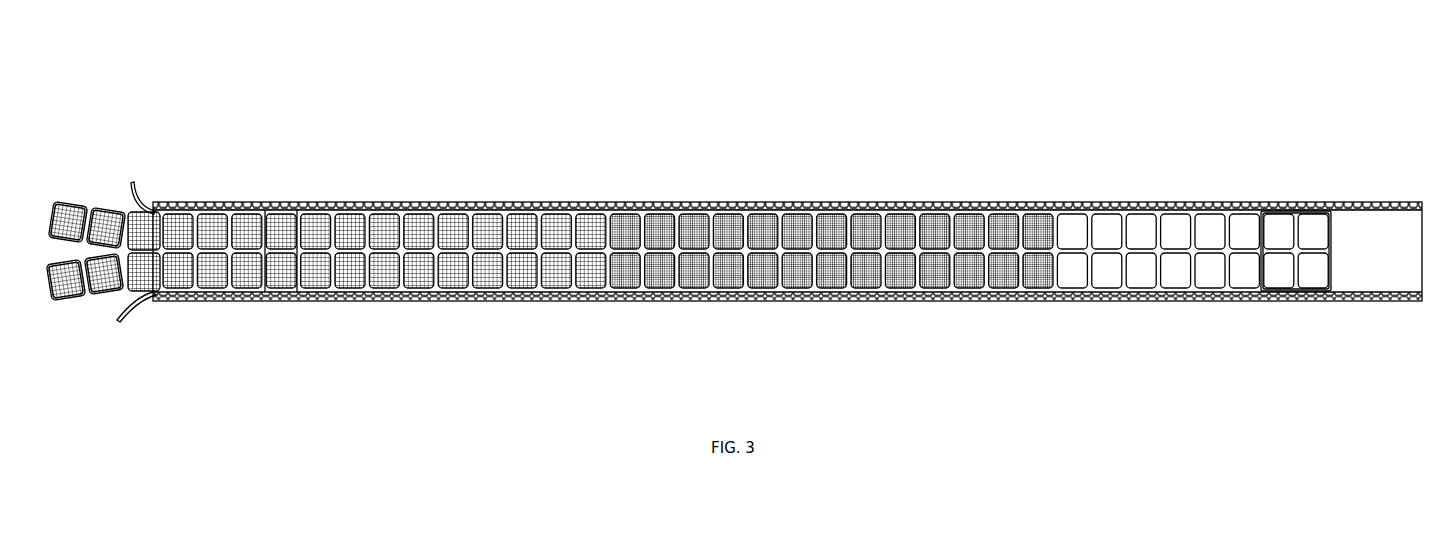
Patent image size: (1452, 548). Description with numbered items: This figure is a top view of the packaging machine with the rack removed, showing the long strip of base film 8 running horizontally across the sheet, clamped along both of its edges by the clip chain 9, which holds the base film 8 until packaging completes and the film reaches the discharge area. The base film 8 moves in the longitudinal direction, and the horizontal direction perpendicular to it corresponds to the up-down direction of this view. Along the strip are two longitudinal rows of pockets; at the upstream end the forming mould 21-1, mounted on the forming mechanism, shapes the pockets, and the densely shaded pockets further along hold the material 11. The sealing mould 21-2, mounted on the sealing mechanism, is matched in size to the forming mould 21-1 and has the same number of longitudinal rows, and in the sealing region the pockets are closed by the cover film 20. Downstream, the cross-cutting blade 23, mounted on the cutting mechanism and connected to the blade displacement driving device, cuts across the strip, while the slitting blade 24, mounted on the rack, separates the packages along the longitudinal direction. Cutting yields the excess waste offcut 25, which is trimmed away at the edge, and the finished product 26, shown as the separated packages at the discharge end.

The base film 8 is at (1405, 263).
The clip chain 9 is at (1356, 204).
The material 11 is at (975, 270).
The cover film 20 is at (384, 231).
The forming mould 21-1 is at (1283, 235).
The sealing mould 21-2 is at (487, 225).
The cross-cutting blade 23 is at (297, 210).
The slitting blade 24 is at (160, 206).
The excess waste offcut 25 is at (137, 180).
The finished product 26 is at (66, 292).